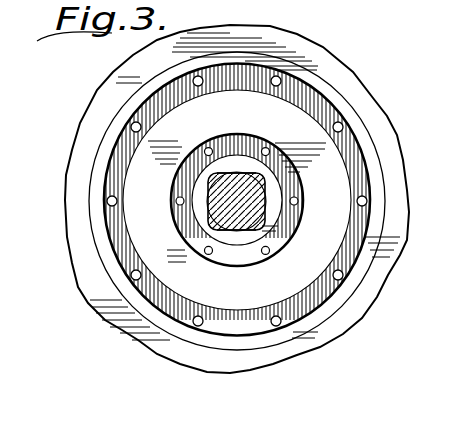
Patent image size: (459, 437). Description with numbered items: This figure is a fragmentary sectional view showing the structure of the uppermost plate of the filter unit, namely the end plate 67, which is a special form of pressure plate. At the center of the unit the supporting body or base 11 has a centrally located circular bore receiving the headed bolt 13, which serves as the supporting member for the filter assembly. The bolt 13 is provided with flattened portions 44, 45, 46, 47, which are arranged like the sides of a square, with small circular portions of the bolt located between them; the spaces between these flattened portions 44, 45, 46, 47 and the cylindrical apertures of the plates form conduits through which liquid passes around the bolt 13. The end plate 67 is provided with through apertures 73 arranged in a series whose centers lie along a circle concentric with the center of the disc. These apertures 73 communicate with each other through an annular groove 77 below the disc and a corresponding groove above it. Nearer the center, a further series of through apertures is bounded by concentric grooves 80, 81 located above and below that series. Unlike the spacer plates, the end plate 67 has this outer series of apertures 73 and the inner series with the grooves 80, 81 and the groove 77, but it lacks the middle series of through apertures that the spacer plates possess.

The supporting body or base 11 is at (348, 82).
The headed bolt 13 is at (422, 197).
The flattened portion 44 is at (237, 175).
The flattened portion 45 is at (207, 188).
The flattened portion 46 is at (243, 231).
The flattened portion 47 is at (266, 191).
The end plate 67 is at (357, 288).
The through apertures 73 is at (132, 273).
The annular groove 77 is at (127, 142).
The groove 80 is at (269, 254).
The groove 81 is at (287, 173).